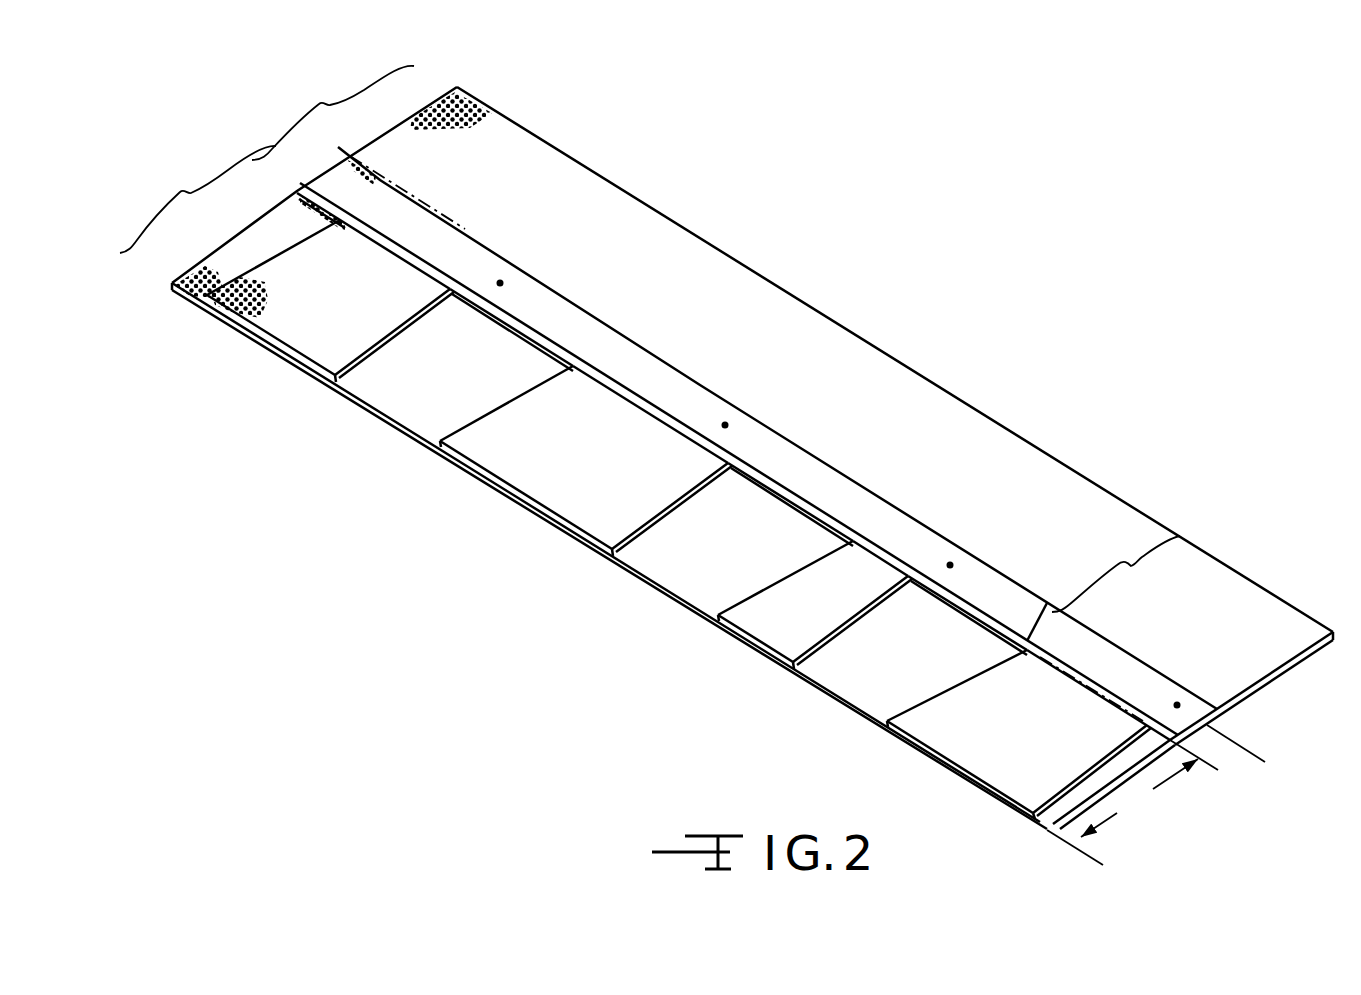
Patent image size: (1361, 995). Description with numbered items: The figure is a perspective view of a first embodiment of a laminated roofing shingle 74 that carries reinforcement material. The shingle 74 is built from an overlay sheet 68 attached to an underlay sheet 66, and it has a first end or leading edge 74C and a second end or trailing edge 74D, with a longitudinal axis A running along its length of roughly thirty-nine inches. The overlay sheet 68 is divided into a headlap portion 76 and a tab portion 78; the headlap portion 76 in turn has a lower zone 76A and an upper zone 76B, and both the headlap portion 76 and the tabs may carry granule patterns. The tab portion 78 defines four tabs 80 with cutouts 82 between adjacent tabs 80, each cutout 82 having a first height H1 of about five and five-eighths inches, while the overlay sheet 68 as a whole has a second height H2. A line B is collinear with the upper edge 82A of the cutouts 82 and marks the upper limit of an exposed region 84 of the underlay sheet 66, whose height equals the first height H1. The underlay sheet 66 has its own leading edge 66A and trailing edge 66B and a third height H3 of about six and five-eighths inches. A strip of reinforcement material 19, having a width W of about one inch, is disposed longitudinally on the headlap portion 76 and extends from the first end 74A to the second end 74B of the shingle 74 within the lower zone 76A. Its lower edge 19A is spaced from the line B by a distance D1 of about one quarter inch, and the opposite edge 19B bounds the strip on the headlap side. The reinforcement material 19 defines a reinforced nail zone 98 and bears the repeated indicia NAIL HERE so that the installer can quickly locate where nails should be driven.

The laminated roofing shingle 74 is at (740, 465).
The first end 74A is at (401, 128).
The second end 74B is at (1303, 655).
The first end or leading edge 74C is at (660, 596).
The second end or trailing edge 74D is at (880, 350).
The headlap portion 76 is at (333, 113).
The lower zone 76A is at (1052, 606).
The upper zone 76B is at (1134, 559).
The tab portion 78 is at (198, 199).
The reinforced nail zone 98 is at (312, 162).
The reinforcement material 19 is at (758, 441).
The lower edge 19A is at (700, 434).
The upper edge of nail strip 19B is at (733, 407).
The underlay sheet 66 is at (731, 547).
The leading edge 66A is at (548, 517).
The trailing edge 66B is at (1207, 726).
The overlay sheet 68 is at (270, 345).
The tabs 80 is at (320, 348).
The cutouts 82 is at (805, 514).
The upper edge 82A is at (962, 613).
The exposed region 84 is at (1125, 795).
The longitudinal axis A is at (408, 190).
The line B is at (1082, 684).
The first height H1 is at (515, 331).
The second height H2 is at (287, 339).
The third height H3 is at (1250, 758).
The distance D1 is at (455, 337).
The width W is at (800, 444).